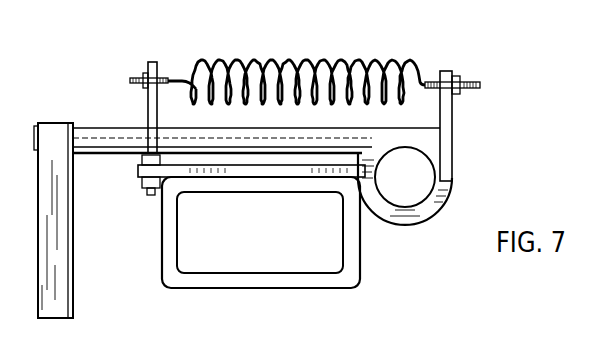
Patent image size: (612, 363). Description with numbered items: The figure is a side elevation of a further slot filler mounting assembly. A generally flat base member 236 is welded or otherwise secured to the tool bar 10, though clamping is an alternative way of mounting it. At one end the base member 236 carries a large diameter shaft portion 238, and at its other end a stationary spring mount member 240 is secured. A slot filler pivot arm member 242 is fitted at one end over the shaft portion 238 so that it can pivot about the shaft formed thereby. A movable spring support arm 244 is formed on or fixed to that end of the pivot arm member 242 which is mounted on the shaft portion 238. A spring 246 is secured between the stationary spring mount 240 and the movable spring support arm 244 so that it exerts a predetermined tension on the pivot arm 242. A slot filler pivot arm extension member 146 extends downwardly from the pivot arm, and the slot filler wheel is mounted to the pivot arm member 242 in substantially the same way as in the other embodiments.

The tool bar 10 is at (346, 267).
The slot filler pivot arm extension member 146 is at (54, 135).
The base member 236 is at (238, 174).
The shaft portion 238 is at (420, 190).
The stationary spring mount member 240 is at (152, 62).
The slot filler pivot arm member 242 is at (117, 130).
The movable spring support arm 244 is at (450, 71).
The spring 246 is at (306, 58).